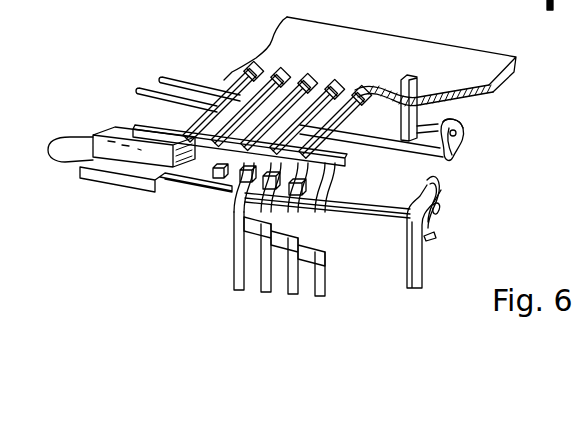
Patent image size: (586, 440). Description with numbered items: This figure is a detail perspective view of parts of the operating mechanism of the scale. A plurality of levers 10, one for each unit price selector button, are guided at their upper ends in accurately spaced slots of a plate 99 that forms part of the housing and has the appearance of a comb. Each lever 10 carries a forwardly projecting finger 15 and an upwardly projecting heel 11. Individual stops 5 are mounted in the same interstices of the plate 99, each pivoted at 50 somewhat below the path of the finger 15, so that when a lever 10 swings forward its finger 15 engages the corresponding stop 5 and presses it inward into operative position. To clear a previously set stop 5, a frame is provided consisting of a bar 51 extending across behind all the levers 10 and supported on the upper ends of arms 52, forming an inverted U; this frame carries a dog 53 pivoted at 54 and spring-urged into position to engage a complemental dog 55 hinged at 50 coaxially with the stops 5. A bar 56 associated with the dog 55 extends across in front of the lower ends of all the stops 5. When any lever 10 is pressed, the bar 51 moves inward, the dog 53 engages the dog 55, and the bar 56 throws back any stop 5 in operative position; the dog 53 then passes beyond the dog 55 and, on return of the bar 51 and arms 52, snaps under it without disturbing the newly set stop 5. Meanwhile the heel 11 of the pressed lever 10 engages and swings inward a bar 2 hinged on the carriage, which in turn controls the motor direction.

The bar 2 is at (349, 180).
The stop 5 is at (413, 93).
The lever 10 is at (300, 283).
The heel 11 is at (237, 202).
The finger 15 is at (345, 158).
The pivot 50 is at (458, 131).
The bar 51 is at (360, 202).
The arms 52 is at (423, 262).
The dog 53 is at (424, 180).
The pivot 54 is at (434, 200).
The complemental dog 55 is at (466, 157).
The bar 56 is at (444, 122).
The plate 99 is at (370, 61).